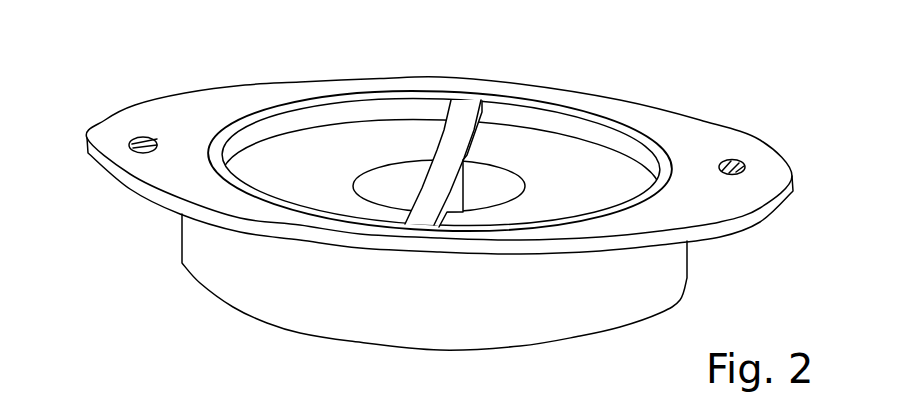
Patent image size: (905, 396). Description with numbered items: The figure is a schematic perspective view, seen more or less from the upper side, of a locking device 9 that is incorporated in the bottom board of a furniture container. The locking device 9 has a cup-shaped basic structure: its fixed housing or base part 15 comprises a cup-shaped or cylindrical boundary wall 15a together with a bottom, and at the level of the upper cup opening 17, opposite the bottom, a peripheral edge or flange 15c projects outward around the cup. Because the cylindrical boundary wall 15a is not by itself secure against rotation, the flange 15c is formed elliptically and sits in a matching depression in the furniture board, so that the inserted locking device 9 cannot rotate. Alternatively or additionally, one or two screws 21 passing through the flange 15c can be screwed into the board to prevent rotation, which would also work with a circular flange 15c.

The locking device 9 is at (651, 66).
The base part 15 is at (143, 276).
The cylindrical boundary wall 15a is at (352, 307).
The flange 15c is at (213, 107).
The upper cup opening 17 is at (243, 178).
The screws 21 is at (142, 133).